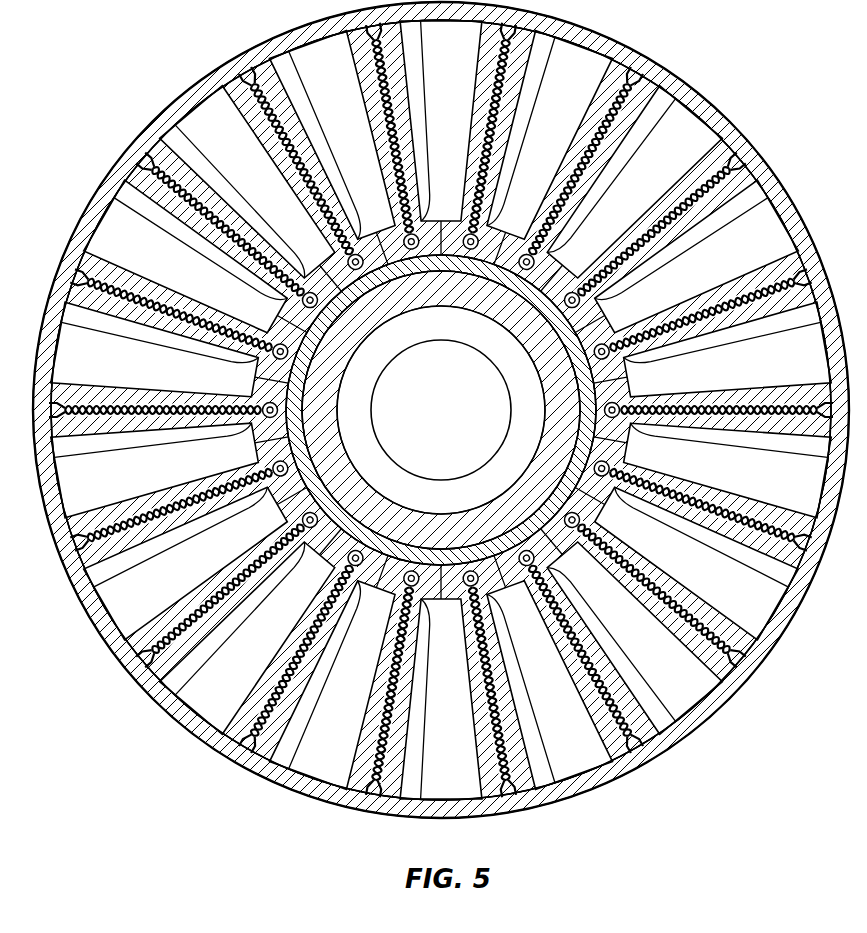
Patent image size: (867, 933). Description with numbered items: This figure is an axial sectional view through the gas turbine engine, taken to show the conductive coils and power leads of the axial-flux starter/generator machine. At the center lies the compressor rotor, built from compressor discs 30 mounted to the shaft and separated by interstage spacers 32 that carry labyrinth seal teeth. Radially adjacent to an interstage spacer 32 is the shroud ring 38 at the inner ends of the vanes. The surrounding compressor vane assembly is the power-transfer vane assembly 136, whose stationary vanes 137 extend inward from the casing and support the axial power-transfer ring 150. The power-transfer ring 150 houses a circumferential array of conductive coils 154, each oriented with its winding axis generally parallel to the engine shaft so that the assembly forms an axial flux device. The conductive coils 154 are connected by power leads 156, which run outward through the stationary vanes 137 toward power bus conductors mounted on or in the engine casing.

The compressor disc 30 is at (452, 333).
The interstage spacer 32 is at (528, 377).
The shroud ring 38 is at (387, 562).
The power-transfer vane assembly 136 is at (119, 163).
The stationary vanes 137 is at (170, 134).
The axial power-transfer ring 150 is at (540, 458).
The conductive coil 154 is at (350, 298).
The power leads 156 is at (278, 138).